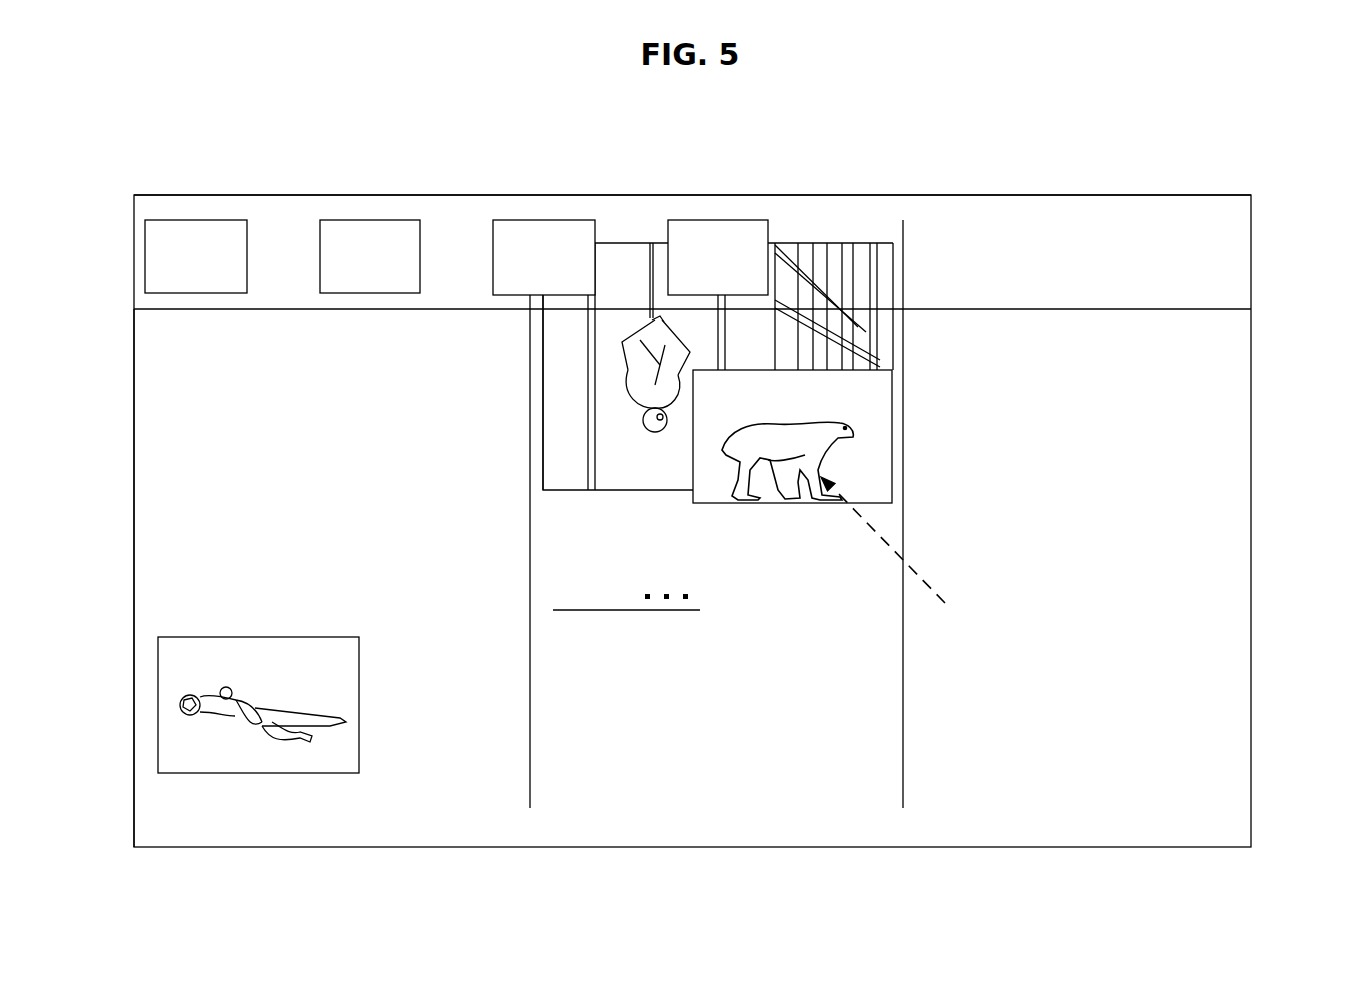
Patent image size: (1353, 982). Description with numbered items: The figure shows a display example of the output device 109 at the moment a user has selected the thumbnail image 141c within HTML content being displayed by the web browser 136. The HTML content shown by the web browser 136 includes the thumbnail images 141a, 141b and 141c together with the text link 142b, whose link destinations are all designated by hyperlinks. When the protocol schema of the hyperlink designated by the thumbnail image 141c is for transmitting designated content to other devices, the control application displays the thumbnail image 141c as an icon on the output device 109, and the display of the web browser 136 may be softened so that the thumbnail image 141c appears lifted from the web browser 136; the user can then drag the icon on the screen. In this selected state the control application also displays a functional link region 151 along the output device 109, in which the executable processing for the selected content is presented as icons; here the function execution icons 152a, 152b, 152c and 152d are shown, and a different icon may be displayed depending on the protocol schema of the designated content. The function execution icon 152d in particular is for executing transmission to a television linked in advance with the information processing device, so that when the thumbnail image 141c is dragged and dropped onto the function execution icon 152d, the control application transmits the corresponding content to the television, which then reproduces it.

The functional link region 151 is at (1233, 252).
The output device 109 is at (453, 195).
The web browser 136 is at (150, 405).
The function execution icon 152a is at (190, 220).
The function execution icon 152b is at (363, 220).
The function execution icon 152c is at (538, 220).
The function execution icon 152d is at (711, 220).
The thumbnail image 141a is at (258, 637).
The thumbnail image 141b is at (617, 490).
The thumbnail image 141c is at (780, 503).
The text link 142b is at (617, 612).